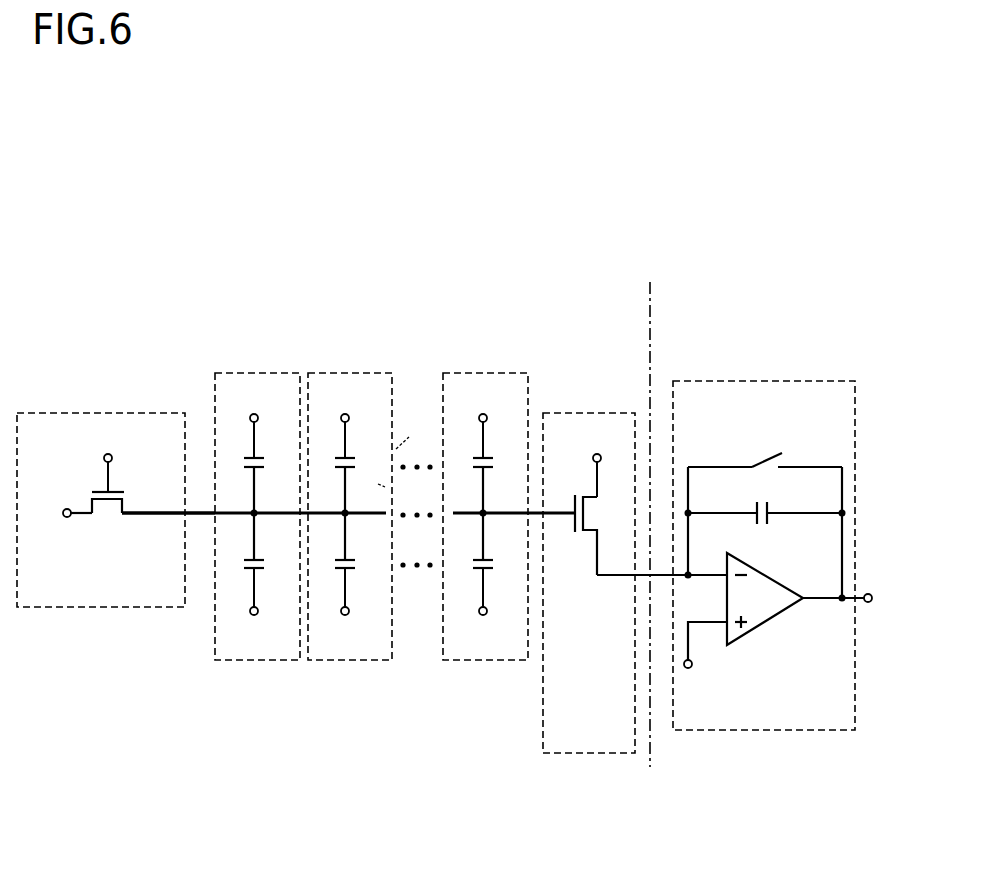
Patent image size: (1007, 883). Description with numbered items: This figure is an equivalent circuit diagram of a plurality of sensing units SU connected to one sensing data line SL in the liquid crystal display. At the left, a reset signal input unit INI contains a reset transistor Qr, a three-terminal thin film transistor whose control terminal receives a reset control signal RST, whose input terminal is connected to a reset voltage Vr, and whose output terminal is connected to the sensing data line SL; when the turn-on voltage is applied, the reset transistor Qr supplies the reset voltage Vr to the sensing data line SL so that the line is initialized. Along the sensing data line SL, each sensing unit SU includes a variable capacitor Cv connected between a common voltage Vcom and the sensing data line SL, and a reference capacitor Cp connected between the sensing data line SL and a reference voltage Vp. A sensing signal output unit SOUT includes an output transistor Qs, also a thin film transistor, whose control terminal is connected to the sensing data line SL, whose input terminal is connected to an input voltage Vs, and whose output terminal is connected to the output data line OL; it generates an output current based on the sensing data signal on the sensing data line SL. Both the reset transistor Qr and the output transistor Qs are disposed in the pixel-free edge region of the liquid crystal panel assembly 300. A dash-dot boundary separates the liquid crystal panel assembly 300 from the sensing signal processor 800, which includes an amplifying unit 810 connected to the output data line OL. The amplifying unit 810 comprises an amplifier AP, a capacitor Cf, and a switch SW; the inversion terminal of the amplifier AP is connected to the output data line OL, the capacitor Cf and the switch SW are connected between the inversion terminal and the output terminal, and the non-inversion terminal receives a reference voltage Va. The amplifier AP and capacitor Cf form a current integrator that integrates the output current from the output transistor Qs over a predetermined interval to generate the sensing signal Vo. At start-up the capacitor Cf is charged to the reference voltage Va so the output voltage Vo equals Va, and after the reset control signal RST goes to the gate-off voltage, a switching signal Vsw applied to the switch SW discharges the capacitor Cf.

The liquid crystal panel assembly 300 is at (650, 296).
The sensing signal processor 800 is at (706, 311).
The amplifying unit 810 is at (767, 381).
The reset signal input unit INI is at (102, 413).
The sensing data line SL is at (198, 511).
The sensing unit SU is at (259, 372).
The sensing signal output unit SOUT is at (579, 413).
The reset control signal RST is at (107, 459).
The reset voltage Vr is at (62, 513).
The reset transistor Qr is at (108, 518).
The common voltage Vcom is at (369, 424).
The variable capacitor Cv is at (381, 483).
The reference capacitor Cp is at (381, 546).
The reference voltage Vp is at (368, 608).
The input voltage Vs is at (597, 462).
The output transistor Qs is at (599, 535).
The output data line OL is at (596, 574).
The switching signal Vsw is at (765, 451).
The switch SW is at (765, 459).
The capacitor Cf is at (765, 505).
The amplifier AP is at (768, 621).
The reference voltage Va is at (702, 659).
The sensing signal Vo is at (851, 599).